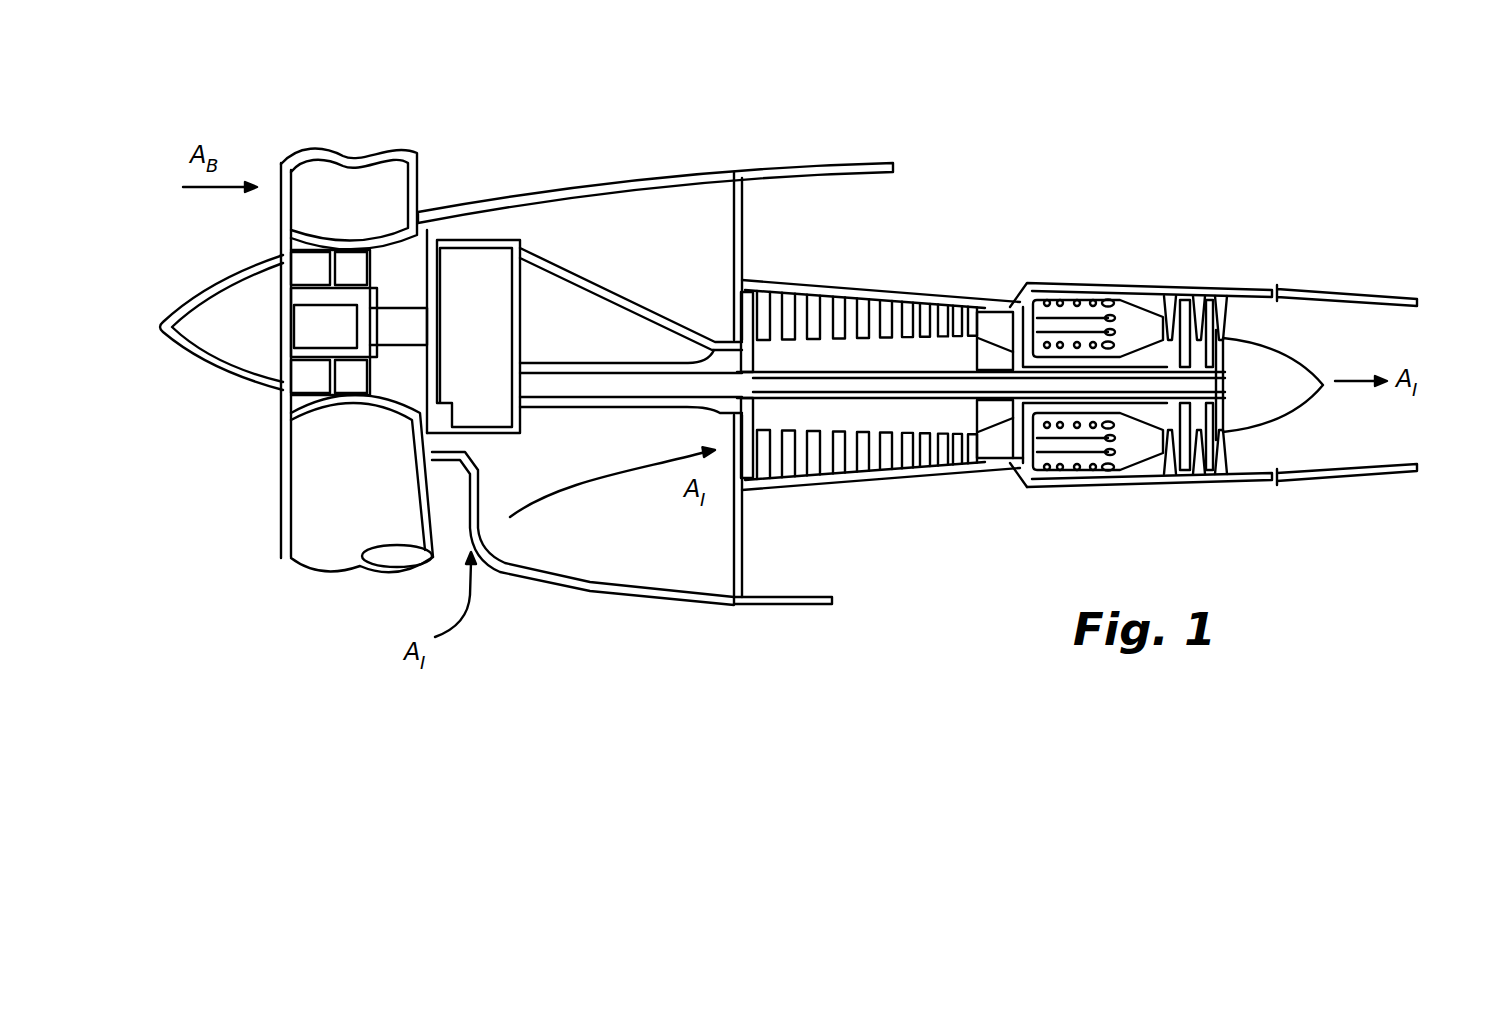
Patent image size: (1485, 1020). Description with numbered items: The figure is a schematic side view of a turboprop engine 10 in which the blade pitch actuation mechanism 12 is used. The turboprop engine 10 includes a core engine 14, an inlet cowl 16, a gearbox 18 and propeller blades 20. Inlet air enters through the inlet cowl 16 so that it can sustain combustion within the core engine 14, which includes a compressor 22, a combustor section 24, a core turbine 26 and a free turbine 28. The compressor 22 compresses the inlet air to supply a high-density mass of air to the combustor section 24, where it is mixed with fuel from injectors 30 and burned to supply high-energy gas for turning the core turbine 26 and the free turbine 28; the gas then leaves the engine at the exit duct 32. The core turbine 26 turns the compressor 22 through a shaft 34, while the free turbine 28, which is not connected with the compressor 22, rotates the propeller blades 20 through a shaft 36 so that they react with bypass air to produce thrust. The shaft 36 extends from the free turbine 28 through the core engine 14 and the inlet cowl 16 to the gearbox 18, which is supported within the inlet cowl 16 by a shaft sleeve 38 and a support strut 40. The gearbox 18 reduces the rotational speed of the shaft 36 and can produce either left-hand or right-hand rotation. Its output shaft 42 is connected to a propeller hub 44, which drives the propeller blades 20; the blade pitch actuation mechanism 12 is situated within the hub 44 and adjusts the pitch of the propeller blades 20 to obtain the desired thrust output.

The turboprop engine 10 is at (918, 132).
The blade pitch actuation mechanism 12 is at (344, 342).
The core engine 14 is at (1072, 218).
The inlet cowl 16 is at (650, 576).
The gearbox 18 is at (492, 322).
The propeller blades 20 is at (390, 197).
The compressor 22 is at (817, 358).
The combustor section 24 is at (1123, 310).
The core turbine 26 is at (1167, 307).
The free turbine 28 is at (1213, 365).
The injectors 30 is at (1015, 453).
The exit duct 32 is at (1370, 292).
The shaft 34 is at (1013, 370).
The shaft 36 is at (900, 385).
The shaft sleeve 38 is at (615, 397).
The support strut 40 is at (598, 292).
The output shaft 42 is at (410, 303).
The propeller hub 44 is at (318, 288).